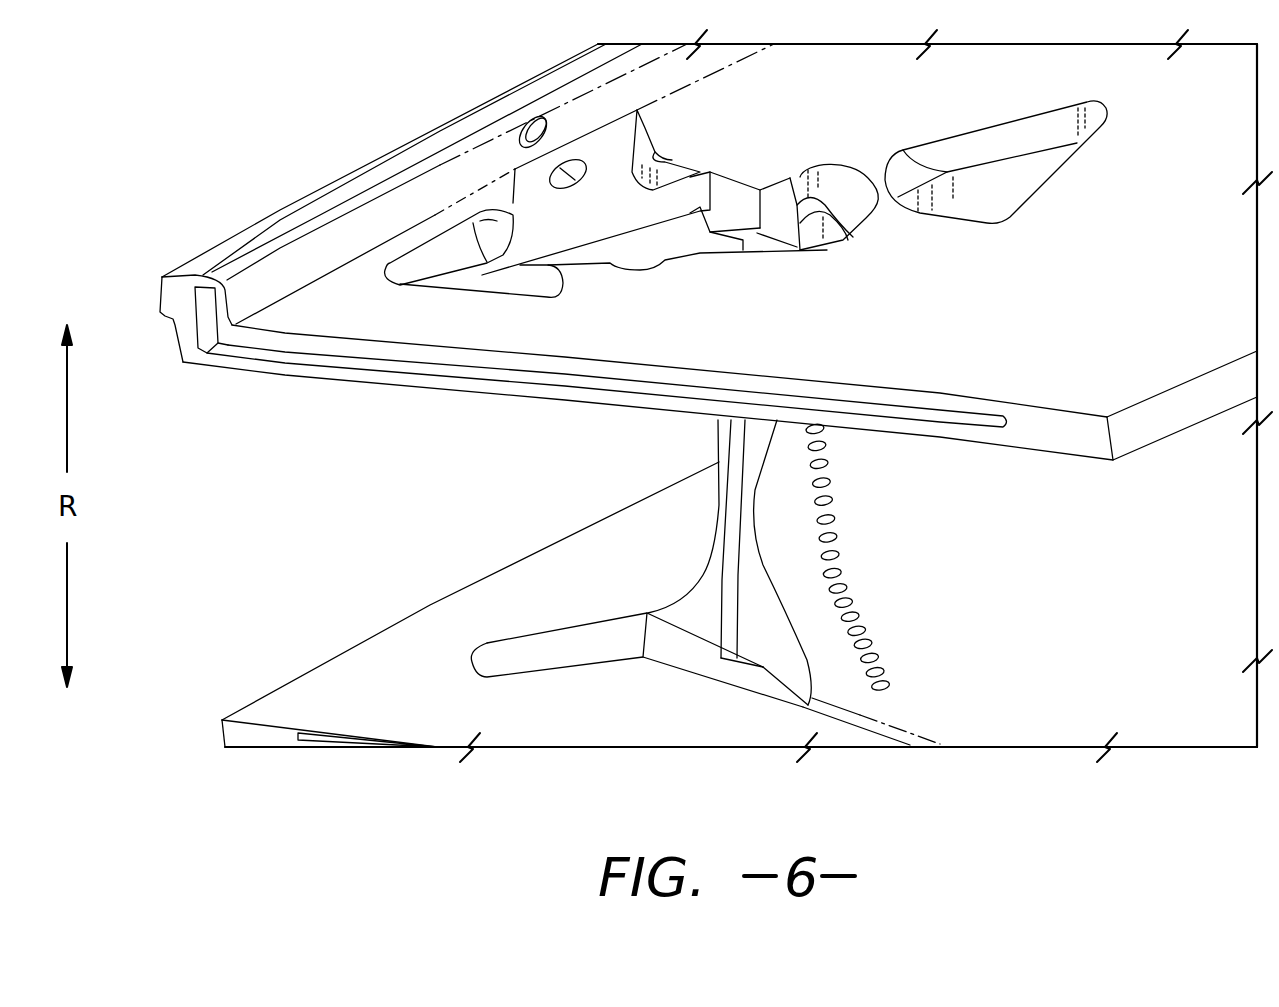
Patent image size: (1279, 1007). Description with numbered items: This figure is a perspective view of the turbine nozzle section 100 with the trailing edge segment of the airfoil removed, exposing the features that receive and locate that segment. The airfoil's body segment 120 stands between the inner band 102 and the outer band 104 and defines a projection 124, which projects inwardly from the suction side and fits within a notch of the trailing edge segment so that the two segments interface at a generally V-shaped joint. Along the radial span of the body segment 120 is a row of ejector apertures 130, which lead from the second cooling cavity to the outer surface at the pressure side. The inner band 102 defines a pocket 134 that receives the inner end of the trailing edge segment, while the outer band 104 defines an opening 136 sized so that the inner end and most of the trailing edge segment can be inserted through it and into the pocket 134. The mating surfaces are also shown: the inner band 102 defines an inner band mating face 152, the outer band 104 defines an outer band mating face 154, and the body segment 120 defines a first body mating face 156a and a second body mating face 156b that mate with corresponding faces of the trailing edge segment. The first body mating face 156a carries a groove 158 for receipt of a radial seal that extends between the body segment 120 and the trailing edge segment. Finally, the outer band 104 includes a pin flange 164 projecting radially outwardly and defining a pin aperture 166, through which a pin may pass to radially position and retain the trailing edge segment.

The turbine nozzle section 100 is at (240, 106).
The inner band 102 is at (373, 663).
The outer band 104 is at (262, 238).
The body segment 120 is at (1088, 705).
The projection 124 is at (775, 235).
The ejector aperture 130 is at (857, 608).
The pocket 134 is at (628, 658).
The opening 136 is at (530, 284).
The inner band mating face 152 is at (559, 648).
The outer band mating face 154 is at (483, 272).
The first body mating face 156a is at (706, 613).
The second body mating face 156b is at (790, 640).
The groove 158 is at (729, 630).
The pin flange 164 is at (625, 135).
The pin aperture 166 is at (583, 187).